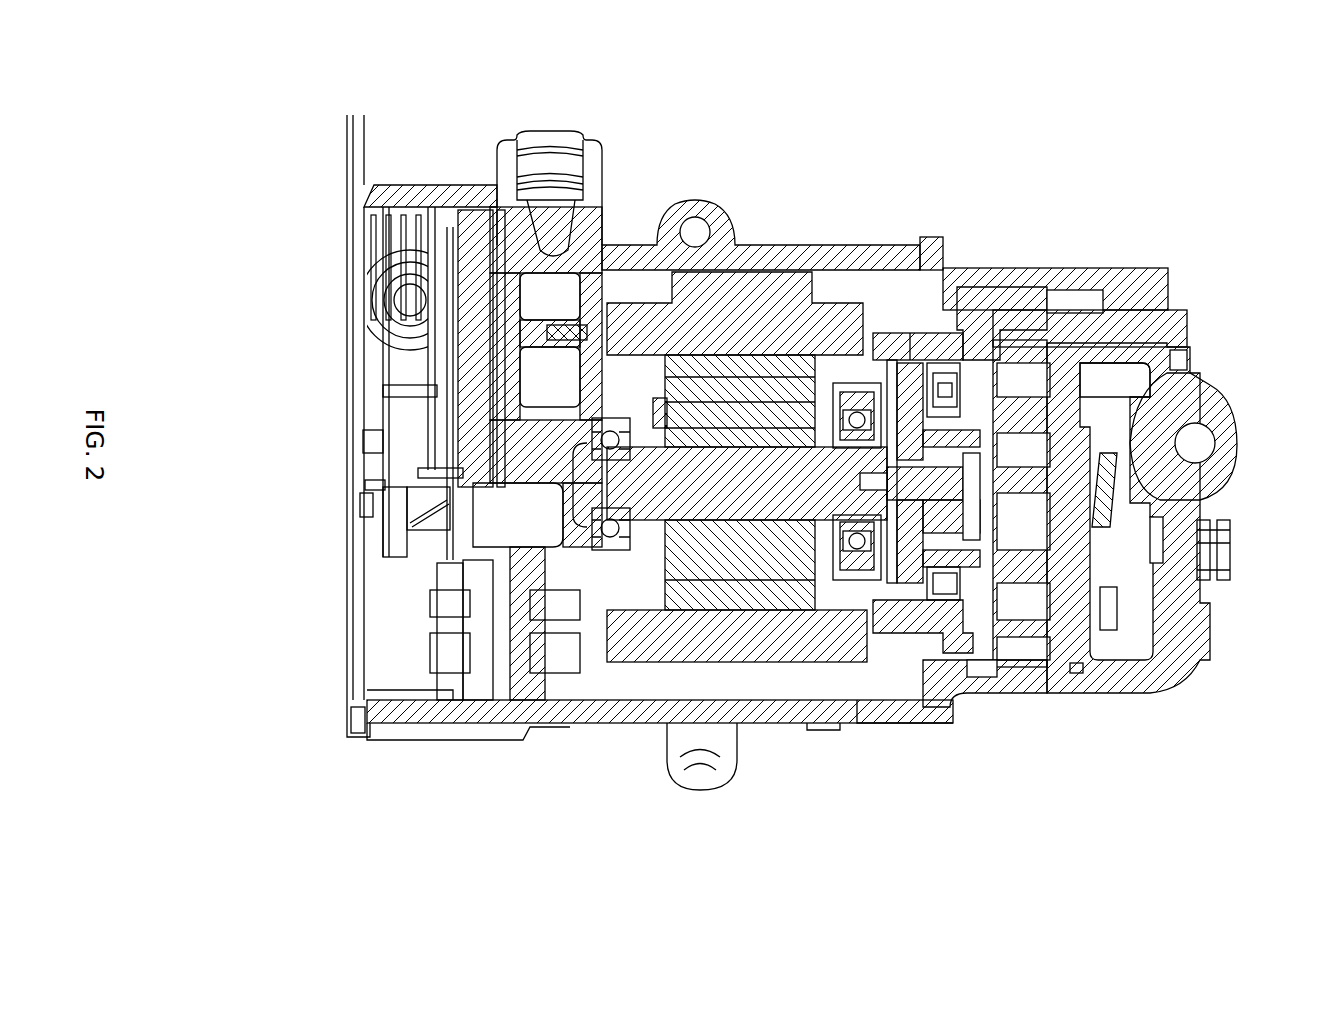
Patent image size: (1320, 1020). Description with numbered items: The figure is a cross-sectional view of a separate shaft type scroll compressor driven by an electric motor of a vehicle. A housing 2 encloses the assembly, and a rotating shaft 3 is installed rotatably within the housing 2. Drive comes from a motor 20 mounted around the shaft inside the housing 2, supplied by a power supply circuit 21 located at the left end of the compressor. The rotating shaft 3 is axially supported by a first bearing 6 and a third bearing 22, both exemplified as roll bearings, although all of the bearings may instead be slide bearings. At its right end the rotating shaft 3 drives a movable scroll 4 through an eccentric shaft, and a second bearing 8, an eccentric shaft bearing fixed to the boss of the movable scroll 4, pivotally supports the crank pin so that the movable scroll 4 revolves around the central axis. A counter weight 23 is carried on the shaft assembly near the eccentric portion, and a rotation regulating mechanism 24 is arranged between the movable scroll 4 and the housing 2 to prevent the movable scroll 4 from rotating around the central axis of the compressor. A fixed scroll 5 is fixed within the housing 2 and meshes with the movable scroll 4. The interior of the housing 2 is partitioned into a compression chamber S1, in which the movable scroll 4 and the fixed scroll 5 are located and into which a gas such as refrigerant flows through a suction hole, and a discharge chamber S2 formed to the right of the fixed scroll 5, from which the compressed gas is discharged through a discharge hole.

The housing 2 is at (612, 715).
The rotating shaft body 3 is at (783, 500).
The movable scroll 4 is at (978, 655).
The fixed scroll 5 is at (1072, 645).
The first bearing 6 is at (600, 414).
The second bearing 8 is at (963, 388).
The motor 20 is at (717, 363).
The power supply circuit 21 is at (362, 393).
The third bearing 22 is at (850, 385).
The counter weight 23 is at (913, 333).
The rotation regulating mechanism 24 is at (960, 335).
The compression chamber S1 is at (1023, 603).
The discharge chamber S2 is at (1093, 403).